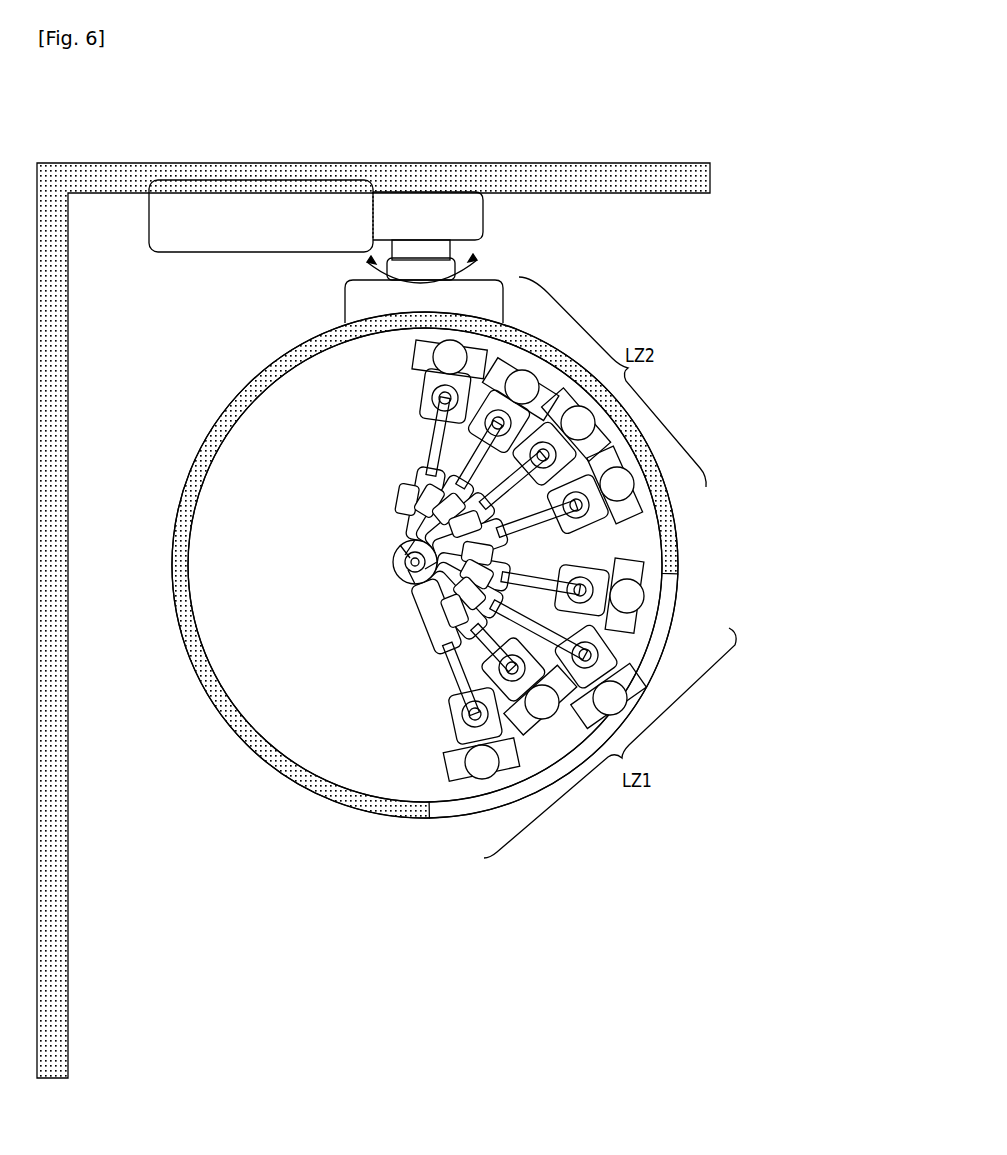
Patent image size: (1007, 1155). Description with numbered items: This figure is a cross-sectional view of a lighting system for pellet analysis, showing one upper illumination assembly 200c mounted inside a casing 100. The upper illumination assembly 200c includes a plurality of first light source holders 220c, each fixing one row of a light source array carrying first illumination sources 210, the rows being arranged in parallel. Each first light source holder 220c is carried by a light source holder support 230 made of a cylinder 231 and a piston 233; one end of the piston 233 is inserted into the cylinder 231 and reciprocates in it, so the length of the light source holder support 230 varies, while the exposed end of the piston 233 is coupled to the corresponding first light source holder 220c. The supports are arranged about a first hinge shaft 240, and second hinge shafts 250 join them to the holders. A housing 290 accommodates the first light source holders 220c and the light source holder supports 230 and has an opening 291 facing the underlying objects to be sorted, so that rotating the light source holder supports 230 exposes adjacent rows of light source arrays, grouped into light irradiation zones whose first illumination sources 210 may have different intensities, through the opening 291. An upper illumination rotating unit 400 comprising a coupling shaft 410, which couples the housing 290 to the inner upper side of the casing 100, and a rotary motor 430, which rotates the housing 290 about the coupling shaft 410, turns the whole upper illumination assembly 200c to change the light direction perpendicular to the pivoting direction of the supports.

The casing 100 is at (660, 165).
The upper illumination rotating unit 400 is at (553, 104).
The rotary motor 430 is at (350, 202).
The coupling shaft 410 is at (413, 250).
The upper illumination assembly 200c is at (808, 347).
The first illumination source 210 is at (632, 593).
The first light source holder 220c is at (637, 629).
The light source holder support 230 is at (445, 554).
The cylinder 231 is at (436, 621).
The piston 233 is at (455, 664).
The first hinge shaft 240 is at (405, 560).
The second hinge shaft 250 is at (462, 712).
The housing 290 is at (333, 801).
The opening 291 is at (430, 814).